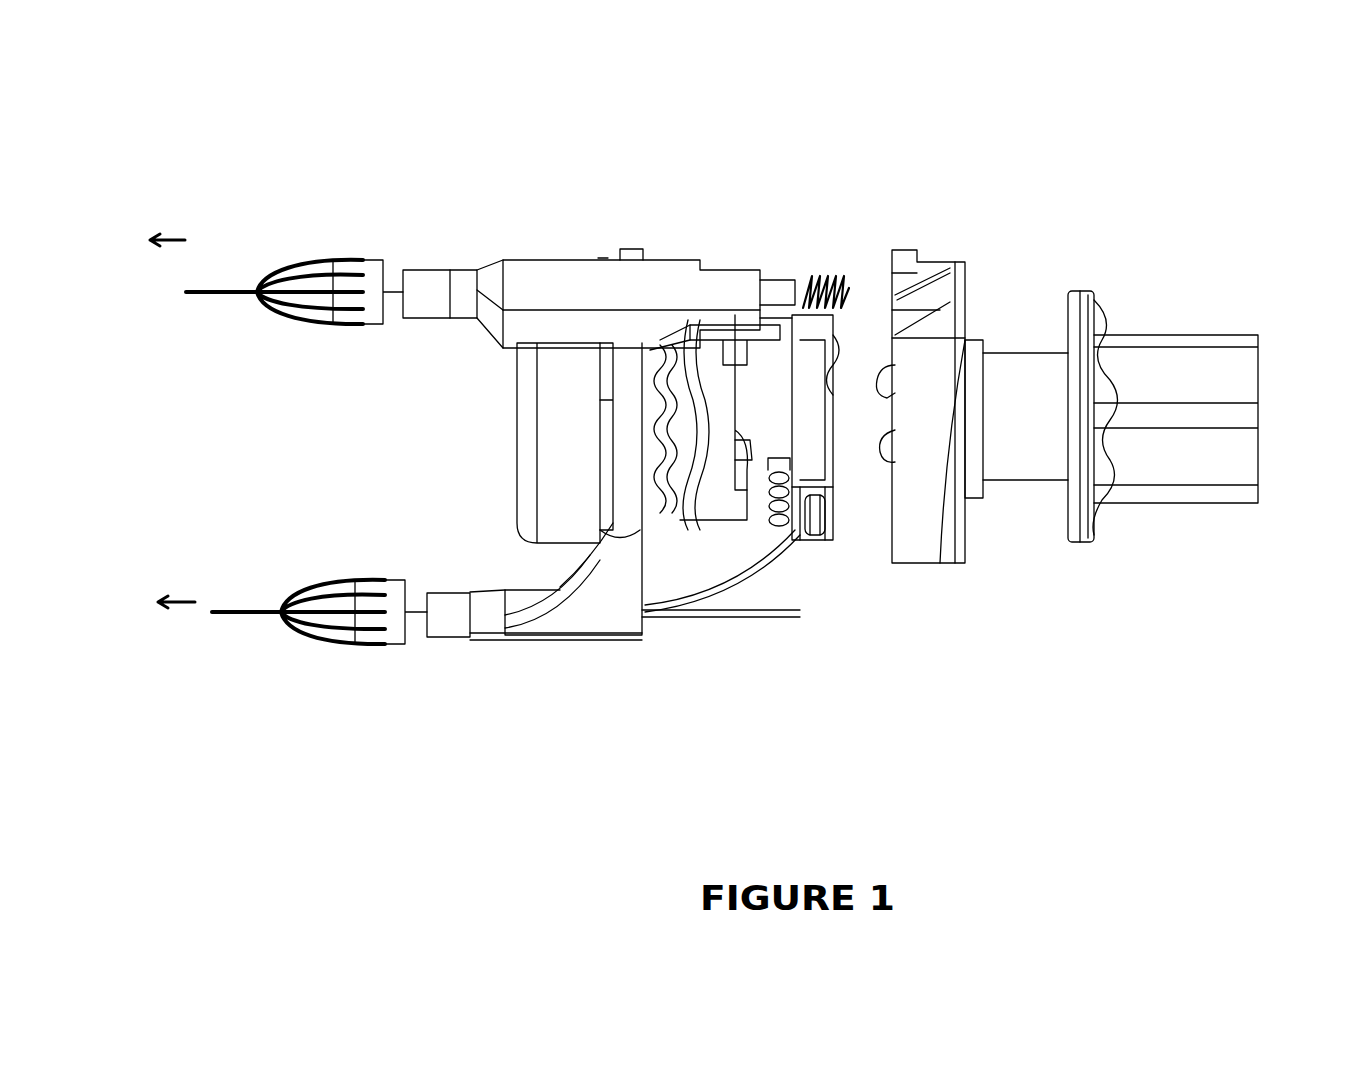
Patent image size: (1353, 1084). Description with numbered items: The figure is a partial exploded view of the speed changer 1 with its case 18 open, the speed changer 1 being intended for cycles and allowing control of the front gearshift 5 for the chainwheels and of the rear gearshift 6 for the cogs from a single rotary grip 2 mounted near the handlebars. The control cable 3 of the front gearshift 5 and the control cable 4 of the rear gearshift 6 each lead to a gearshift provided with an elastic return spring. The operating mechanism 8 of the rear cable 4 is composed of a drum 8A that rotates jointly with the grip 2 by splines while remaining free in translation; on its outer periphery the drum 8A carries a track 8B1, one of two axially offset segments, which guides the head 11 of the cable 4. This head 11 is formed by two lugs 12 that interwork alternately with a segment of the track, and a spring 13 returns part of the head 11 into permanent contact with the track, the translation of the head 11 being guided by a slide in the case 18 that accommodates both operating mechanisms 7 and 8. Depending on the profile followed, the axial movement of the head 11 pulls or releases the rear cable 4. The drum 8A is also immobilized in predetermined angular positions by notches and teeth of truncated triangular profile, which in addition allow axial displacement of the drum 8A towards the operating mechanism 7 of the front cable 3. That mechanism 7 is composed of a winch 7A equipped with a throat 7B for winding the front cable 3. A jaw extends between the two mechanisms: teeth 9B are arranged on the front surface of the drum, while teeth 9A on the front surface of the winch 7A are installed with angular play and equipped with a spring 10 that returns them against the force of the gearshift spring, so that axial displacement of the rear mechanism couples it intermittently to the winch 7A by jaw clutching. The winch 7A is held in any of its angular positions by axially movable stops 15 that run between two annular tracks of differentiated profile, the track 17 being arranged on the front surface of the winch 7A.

The speed changer 1 is at (770, 143).
The rotary grip 2 is at (1205, 482).
The control cable of the front gearshift 3 is at (228, 615).
The control cable of the rear gearshift 4 is at (207, 290).
The front gearshift 5 is at (176, 579).
The rear gearshift 6 is at (170, 217).
The operating mechanism of the front cable 7 is at (832, 503).
The winch 7A is at (808, 442).
The throat 7B is at (820, 537).
The operating mechanism of the rear cable 8 is at (715, 460).
The drum 8A is at (662, 445).
The track 8B1 is at (708, 392).
The jaw tooth 9A is at (772, 524).
The jaw tooth 9B is at (735, 490).
The spring 10 is at (806, 530).
The cable head 11 is at (746, 283).
The lug 12 is at (735, 340).
The spring 13 is at (857, 270).
The stops 15 is at (871, 458).
The annular track 17 is at (858, 352).
The case 18 is at (568, 407).